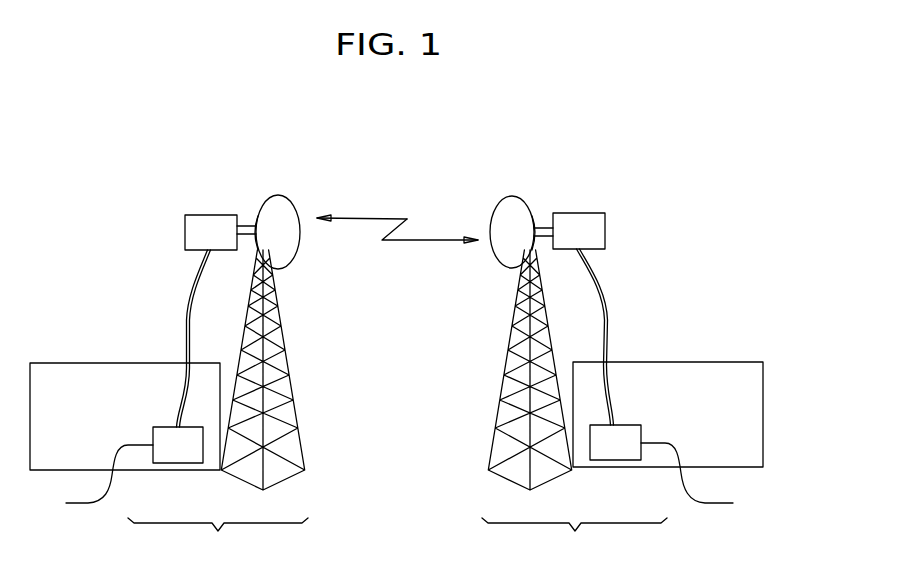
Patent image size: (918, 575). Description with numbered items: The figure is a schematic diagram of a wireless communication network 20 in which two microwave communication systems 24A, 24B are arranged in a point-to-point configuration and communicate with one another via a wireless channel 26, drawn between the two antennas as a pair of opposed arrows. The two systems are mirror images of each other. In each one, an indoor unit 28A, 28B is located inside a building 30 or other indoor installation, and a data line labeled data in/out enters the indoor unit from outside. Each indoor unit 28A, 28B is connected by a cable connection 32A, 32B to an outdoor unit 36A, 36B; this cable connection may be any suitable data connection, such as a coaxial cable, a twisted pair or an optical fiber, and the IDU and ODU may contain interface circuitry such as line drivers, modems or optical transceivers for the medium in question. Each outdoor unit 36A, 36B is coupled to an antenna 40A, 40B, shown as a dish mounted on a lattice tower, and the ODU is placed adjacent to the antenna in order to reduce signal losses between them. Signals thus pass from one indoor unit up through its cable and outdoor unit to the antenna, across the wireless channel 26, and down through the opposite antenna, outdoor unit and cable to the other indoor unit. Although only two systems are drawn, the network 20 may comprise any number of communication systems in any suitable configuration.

The wireless communication network 20 is at (222, 105).
The microwave communication system 24A is at (218, 407).
The microwave communication system 24B is at (574, 406).
The wireless channel 26 is at (405, 241).
The indoor unit (IDU) 28A is at (152, 434).
The indoor unit (IDU) 28B is at (641, 432).
The building 30 is at (80, 362).
The cable connection 32A is at (185, 331).
The cable connection 32B is at (608, 332).
The outdoor unit (ODU) 36A is at (222, 214).
The outdoor unit (ODU) 36B is at (566, 213).
The antenna 40A is at (283, 207).
The antenna 40B is at (506, 207).